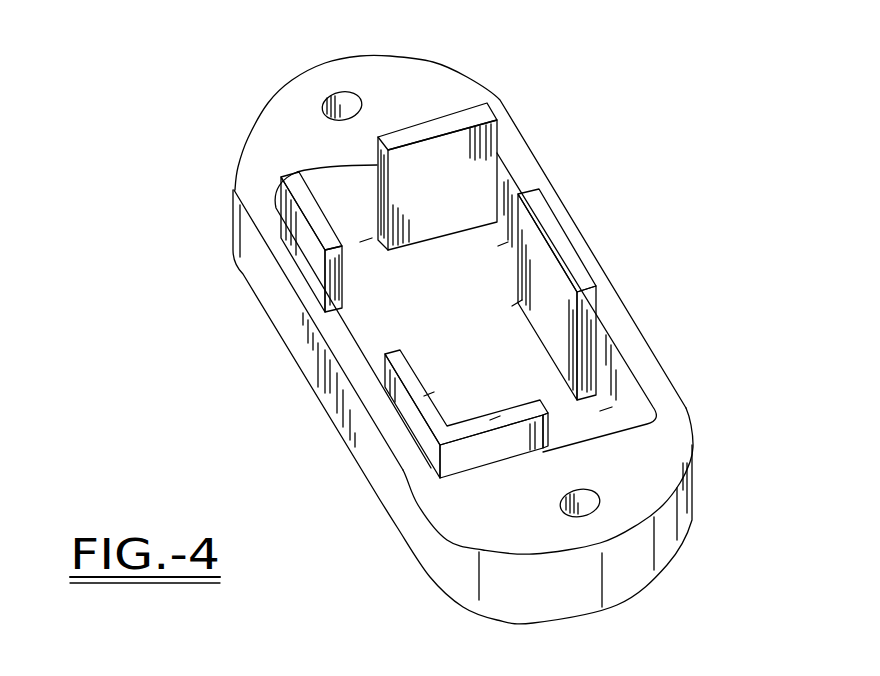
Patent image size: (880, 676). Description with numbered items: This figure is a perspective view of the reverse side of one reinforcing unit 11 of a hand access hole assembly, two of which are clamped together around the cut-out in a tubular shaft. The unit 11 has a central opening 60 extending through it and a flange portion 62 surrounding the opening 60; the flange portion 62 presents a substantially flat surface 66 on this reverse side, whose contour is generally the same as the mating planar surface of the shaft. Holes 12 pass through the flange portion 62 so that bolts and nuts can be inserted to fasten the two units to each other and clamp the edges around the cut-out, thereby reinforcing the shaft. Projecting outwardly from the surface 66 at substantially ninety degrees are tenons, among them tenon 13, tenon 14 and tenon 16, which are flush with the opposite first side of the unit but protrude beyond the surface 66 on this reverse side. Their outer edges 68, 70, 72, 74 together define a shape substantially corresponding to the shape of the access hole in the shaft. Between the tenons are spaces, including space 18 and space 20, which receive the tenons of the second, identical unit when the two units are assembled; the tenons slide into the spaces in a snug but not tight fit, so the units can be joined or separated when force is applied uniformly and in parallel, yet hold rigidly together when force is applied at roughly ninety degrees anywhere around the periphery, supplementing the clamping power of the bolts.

The reinforcing unit 11 is at (645, 310).
The holes 12 is at (332, 102).
The tenon 13 is at (518, 303).
The tenon 14 is at (505, 244).
The tenon 16 is at (497, 418).
The space 18 is at (362, 240).
The space 20 is at (607, 409).
The central opening 60 is at (390, 326).
The flange portion 62 is at (680, 533).
The surface 66 is at (655, 465).
The outer edge 68 is at (562, 240).
The outer edge 70 is at (446, 116).
The outer edge 72 is at (308, 240).
The outer edge 74 is at (425, 437).